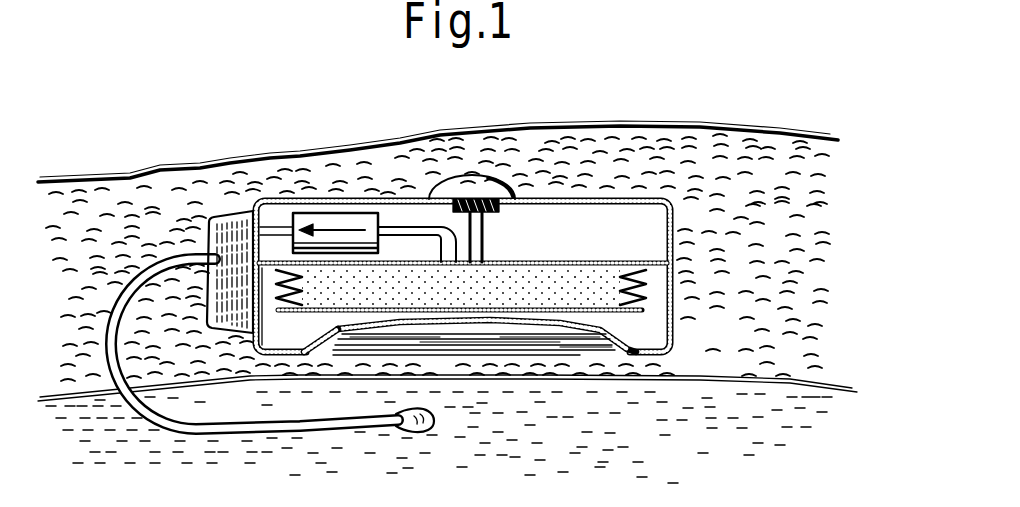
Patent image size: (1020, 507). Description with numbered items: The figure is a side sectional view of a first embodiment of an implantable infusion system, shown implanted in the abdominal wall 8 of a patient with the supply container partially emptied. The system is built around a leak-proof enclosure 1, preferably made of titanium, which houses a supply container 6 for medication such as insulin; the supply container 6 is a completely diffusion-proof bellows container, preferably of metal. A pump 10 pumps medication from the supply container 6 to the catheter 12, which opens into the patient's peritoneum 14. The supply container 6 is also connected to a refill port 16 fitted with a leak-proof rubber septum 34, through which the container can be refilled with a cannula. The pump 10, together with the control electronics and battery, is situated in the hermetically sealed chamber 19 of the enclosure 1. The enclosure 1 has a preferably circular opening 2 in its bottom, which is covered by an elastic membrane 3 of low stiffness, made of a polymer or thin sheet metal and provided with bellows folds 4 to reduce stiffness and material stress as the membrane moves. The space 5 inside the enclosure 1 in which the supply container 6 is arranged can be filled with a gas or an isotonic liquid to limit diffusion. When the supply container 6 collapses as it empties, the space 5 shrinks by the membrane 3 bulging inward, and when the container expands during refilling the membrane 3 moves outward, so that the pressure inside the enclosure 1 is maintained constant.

The enclosure 1 is at (676, 333).
The opening 2 is at (568, 343).
The membrane 3 is at (406, 324).
The bellows folds 4 is at (330, 350).
The space 5 is at (290, 346).
The supply container 6 is at (407, 287).
The abdominal wall 8 is at (778, 160).
The pump 10 is at (314, 218).
The catheter 12 is at (238, 432).
The peritoneum 14 is at (651, 438).
The refill port 16 is at (518, 192).
The hermetically sealed chamber 19 is at (630, 224).
The septum 34 is at (474, 178).